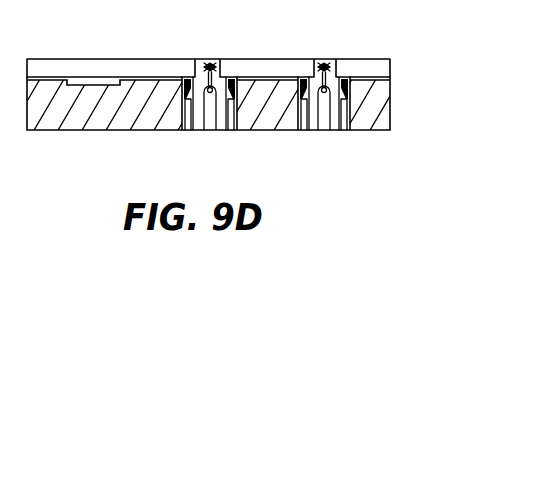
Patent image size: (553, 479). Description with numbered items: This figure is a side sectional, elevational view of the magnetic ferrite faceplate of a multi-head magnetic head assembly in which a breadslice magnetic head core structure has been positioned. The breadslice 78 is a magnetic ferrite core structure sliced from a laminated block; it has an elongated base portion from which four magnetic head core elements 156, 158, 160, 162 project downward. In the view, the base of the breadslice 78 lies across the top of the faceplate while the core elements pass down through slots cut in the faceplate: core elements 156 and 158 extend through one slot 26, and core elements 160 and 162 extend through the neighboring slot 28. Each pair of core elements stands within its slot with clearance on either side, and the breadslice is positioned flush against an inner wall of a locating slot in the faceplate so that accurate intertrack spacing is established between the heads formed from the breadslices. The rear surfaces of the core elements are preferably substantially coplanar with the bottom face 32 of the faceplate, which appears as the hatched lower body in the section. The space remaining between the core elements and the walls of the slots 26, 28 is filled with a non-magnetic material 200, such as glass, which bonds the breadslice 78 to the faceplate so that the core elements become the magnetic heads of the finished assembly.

The breadslice 78 is at (56, 59).
The bottom face 32 is at (82, 130).
The non-magnetic material 200 is at (278, 85).
The magnetic head core element 156 is at (199, 130).
The magnetic head core element 158 is at (219, 130).
The slot 26 is at (233, 130).
The magnetic head core element 160 is at (312, 130).
The magnetic head core element 162 is at (338, 130).
The slot 28 is at (352, 130).